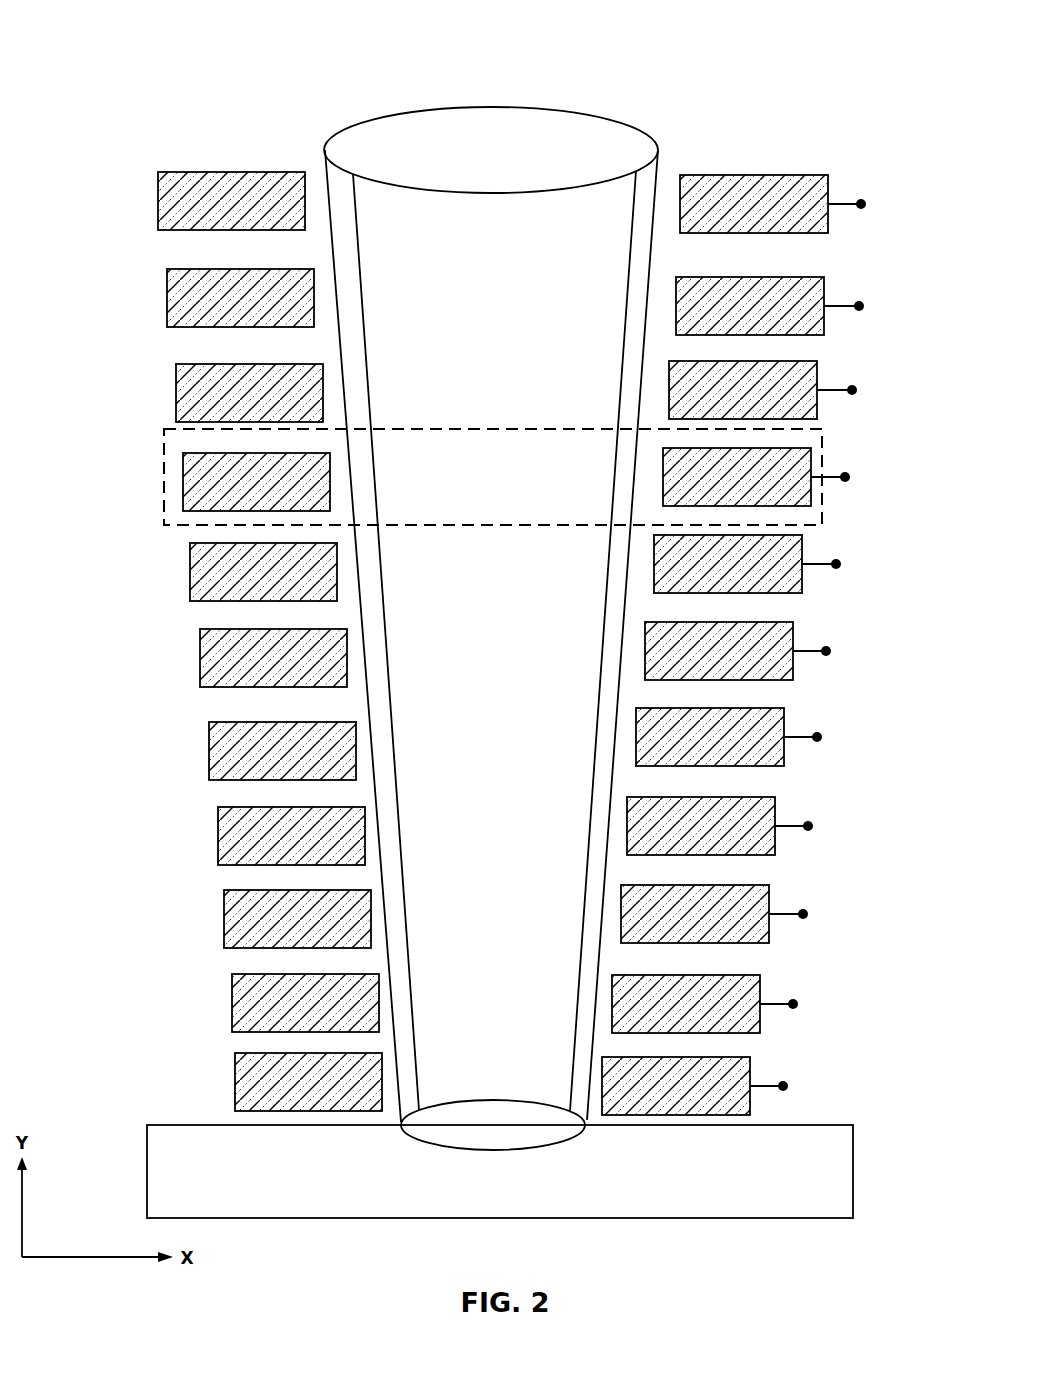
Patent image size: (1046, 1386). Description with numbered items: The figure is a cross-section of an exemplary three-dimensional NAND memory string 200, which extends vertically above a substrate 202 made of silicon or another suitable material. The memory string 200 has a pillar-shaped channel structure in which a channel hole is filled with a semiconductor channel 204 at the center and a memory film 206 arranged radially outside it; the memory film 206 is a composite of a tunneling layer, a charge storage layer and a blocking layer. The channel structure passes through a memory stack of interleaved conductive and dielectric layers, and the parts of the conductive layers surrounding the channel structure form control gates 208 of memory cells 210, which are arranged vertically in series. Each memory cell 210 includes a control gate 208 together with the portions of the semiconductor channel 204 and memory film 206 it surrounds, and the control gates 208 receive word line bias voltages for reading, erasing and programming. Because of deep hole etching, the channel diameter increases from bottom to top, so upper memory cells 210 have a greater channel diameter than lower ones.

The 3D NAND memory string 200 is at (501, 611).
The substrate 202 is at (486, 1197).
The semiconductor channel 204 is at (500, 580).
The memory film 206 is at (531, 619).
The control gate 208 is at (216, 481).
The memory cell 210 is at (456, 460).